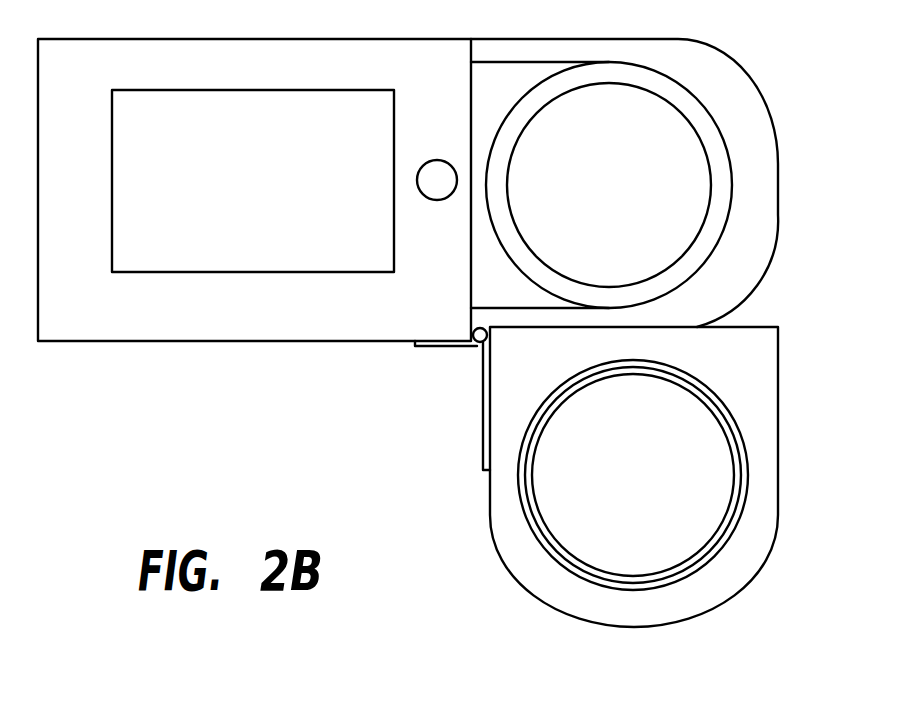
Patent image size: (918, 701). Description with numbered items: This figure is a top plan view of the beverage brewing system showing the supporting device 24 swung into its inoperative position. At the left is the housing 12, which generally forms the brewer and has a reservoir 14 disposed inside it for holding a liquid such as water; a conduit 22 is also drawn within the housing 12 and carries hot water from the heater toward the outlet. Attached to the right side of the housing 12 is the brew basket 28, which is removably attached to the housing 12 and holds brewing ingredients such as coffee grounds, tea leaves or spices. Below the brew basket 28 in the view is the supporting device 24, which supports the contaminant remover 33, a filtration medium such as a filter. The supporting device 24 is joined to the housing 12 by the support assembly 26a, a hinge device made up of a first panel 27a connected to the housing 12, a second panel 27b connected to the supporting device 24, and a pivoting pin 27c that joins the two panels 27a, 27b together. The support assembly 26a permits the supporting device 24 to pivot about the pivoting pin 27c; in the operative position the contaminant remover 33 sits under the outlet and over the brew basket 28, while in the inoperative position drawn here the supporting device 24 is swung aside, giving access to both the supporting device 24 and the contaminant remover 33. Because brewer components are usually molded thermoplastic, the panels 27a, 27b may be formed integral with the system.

The housing 12 is at (165, 342).
The reservoir 14 is at (238, 193).
The conduit 22 is at (435, 180).
The supporting device 24 is at (778, 417).
The support assembly 26a is at (390, 432).
The first panel 27a is at (433, 348).
The second panel 27b is at (480, 442).
The pivoting pin 27c is at (479, 347).
The brew basket 28 is at (590, 193).
The contaminant remover 33 is at (621, 483).